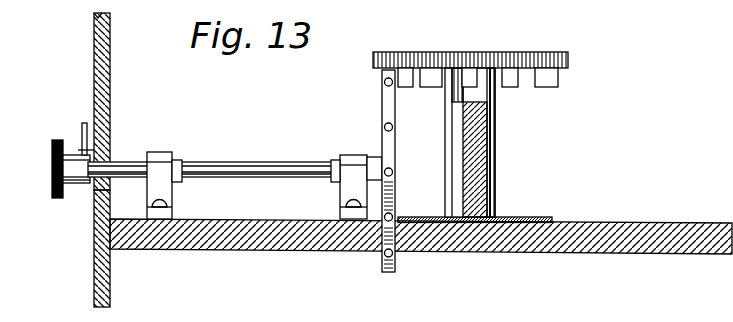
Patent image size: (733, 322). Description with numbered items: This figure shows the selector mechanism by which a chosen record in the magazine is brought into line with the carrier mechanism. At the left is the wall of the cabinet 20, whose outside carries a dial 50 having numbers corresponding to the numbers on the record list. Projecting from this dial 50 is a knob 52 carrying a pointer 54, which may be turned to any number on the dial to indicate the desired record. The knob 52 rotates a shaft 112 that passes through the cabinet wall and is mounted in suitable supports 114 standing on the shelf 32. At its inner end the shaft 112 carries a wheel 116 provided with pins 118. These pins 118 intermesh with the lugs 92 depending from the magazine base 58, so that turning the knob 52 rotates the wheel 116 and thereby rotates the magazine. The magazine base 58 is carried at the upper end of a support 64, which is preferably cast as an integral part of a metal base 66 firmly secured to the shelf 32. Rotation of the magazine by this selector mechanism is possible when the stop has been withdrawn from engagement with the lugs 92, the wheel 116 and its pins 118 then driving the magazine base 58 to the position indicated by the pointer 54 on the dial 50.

The cabinet 20 is at (92, 34).
The shelf 32 is at (660, 223).
The dial 50 is at (94, 200).
The knob 52 is at (52, 152).
The pointer 54 is at (83, 131).
The magazine base 58 is at (568, 62).
The support 64 is at (493, 151).
The metal base 66 is at (548, 203).
The lugs 92 is at (478, 70).
The shaft 112 is at (247, 173).
The supports 114 is at (172, 133).
The wheel 116 is at (382, 101).
The pins 118 is at (396, 205).